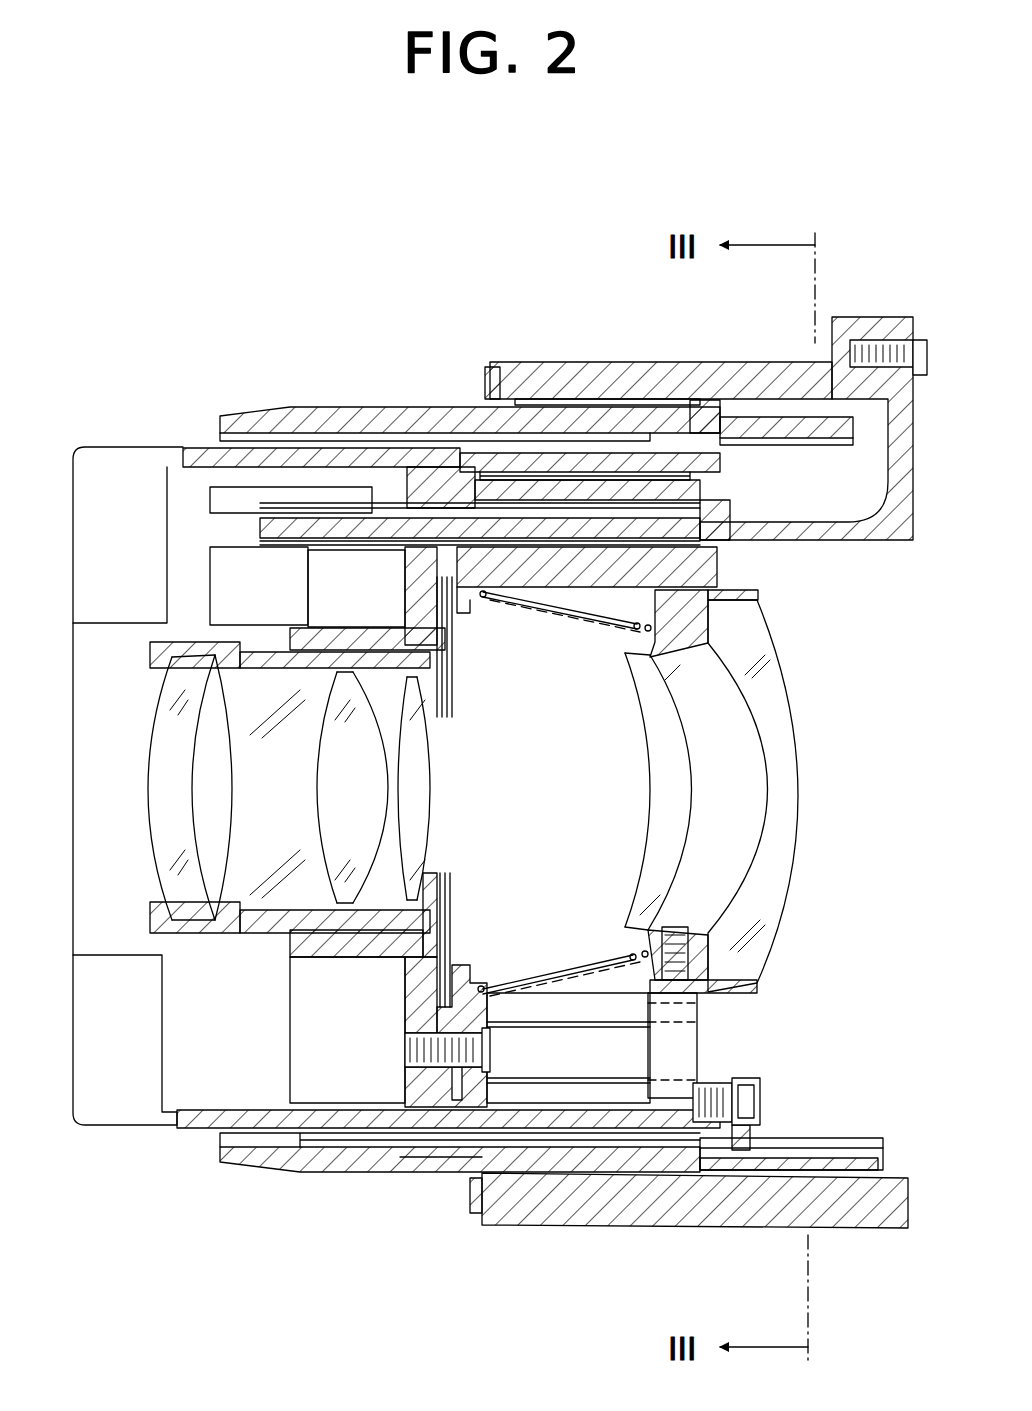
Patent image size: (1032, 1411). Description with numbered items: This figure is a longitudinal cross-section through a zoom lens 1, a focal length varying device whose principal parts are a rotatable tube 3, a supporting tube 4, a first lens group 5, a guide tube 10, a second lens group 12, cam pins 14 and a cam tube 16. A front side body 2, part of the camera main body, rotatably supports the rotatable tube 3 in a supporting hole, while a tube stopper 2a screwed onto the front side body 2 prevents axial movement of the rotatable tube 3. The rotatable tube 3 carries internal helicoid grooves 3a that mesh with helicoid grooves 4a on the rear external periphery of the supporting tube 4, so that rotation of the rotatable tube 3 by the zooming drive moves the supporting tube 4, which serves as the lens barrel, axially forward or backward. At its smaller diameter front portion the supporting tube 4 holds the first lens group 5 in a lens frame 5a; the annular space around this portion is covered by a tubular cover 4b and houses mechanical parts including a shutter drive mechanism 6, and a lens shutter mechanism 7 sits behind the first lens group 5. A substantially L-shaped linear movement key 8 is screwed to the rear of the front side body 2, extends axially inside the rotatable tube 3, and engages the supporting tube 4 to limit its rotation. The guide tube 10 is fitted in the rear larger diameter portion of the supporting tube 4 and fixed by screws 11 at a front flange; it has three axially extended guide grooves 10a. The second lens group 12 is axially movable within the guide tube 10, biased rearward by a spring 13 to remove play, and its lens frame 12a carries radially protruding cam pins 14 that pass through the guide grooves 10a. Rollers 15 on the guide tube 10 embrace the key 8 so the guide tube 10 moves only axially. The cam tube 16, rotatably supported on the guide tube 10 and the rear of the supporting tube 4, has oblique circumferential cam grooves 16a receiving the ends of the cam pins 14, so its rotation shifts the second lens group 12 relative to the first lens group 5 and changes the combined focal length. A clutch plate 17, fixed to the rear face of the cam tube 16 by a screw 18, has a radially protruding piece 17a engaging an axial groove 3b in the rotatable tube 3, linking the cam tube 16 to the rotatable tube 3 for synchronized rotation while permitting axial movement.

The zoom lens 1 is at (432, 338).
The front side body 2 is at (607, 372).
The tube stopper 2a is at (485, 386).
The rotatable tube 3 is at (522, 415).
The helicoid grooves 3a is at (582, 432).
The axial groove 3b is at (848, 1140).
The supporting tube 4 is at (467, 458).
The helicoid grooves 4a is at (676, 440).
The tubular cover 4b is at (258, 447).
The first lens group 5 is at (128, 846).
The lens frame 5a is at (160, 641).
The shutter drive mechanism 6 is at (333, 1092).
The lens shutter mechanism 7 is at (447, 866).
The linear movement key 8 is at (868, 532).
The guide tube 10 is at (507, 577).
The guide grooves 10a is at (550, 990).
The screws 11 is at (490, 1055).
The second lens group 12 is at (815, 773).
The lens frame 12a is at (762, 1000).
The spring 13 is at (628, 953).
The cam pins 14 is at (697, 1058).
The rollers 15 is at (703, 512).
The cam tube 16 is at (583, 490).
The cam grooves 16a is at (570, 1095).
The clutch plate 17 is at (748, 1080).
The radially protruding piece 17a is at (740, 1172).
The screw 18 is at (762, 1108).